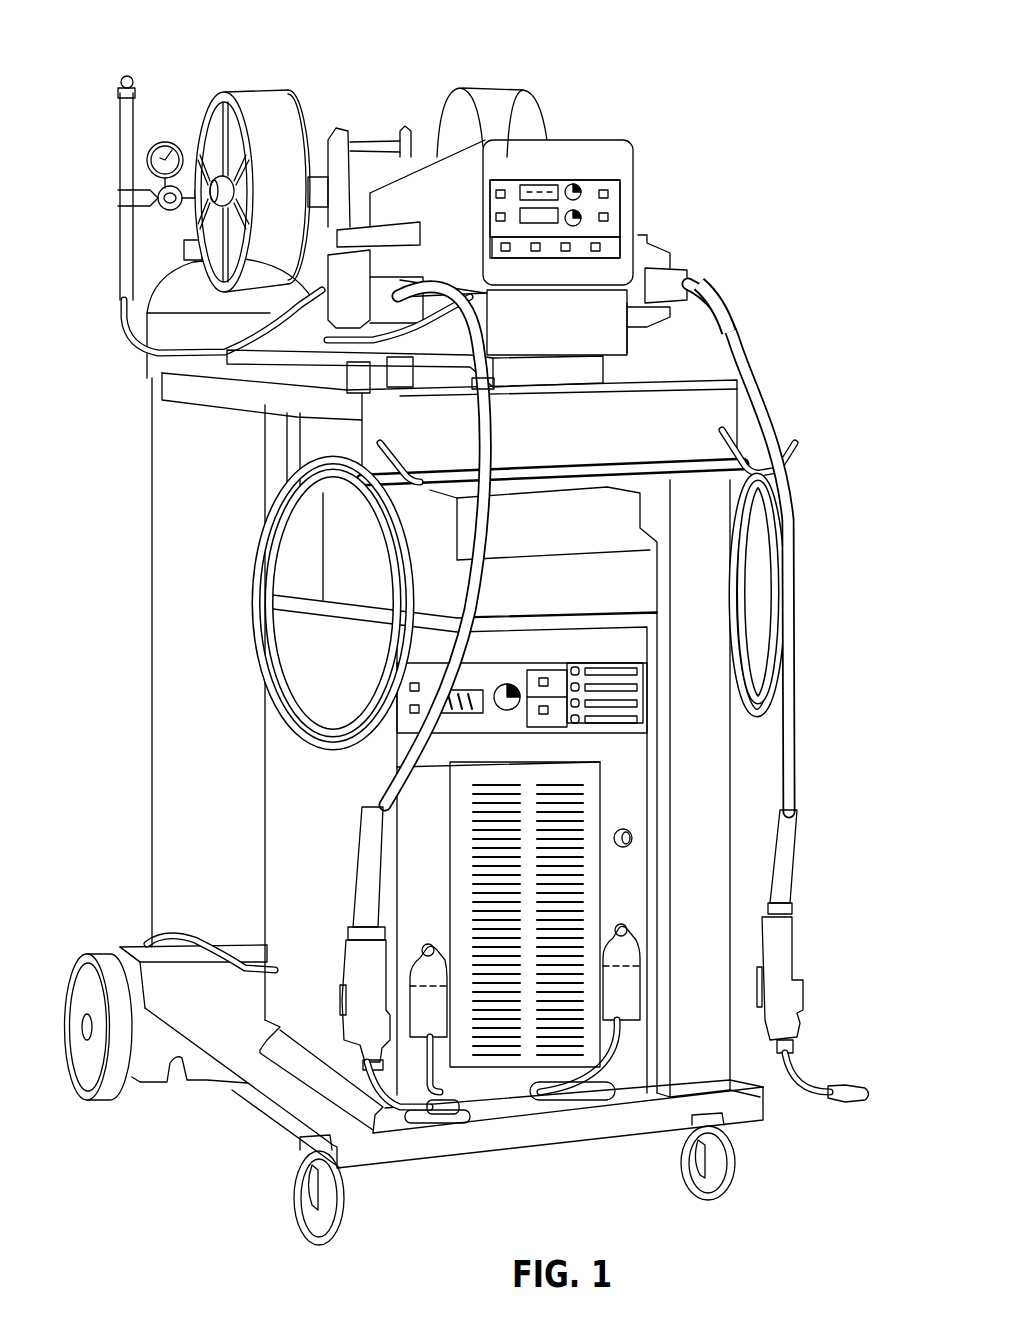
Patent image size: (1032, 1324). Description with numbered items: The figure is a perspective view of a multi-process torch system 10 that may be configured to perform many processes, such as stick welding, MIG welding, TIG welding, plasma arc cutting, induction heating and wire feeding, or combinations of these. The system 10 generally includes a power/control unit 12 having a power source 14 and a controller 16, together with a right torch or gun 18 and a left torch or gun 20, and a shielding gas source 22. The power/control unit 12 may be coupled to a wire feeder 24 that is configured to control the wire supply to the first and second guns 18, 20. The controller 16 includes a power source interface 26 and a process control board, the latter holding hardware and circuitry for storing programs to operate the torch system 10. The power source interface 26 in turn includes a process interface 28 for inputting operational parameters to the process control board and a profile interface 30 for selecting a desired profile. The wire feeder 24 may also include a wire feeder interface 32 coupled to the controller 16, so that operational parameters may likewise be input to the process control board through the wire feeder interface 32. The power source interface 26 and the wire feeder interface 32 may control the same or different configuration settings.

The multi-process torch system 10 is at (684, 36).
The power/control unit 12 is at (520, 1103).
The power source 14 is at (630, 878).
The controller 16 is at (688, 683).
The right torch or gun 18 is at (345, 1038).
The left torch or gun 20 is at (808, 1082).
The shielding gas source 22 is at (162, 521).
The wire feeder 24 is at (591, 133).
The power source interface 26 is at (553, 668).
The process interface 28 is at (398, 722).
The profile interface 30 is at (587, 707).
The wire feeder interface 32 is at (598, 182).